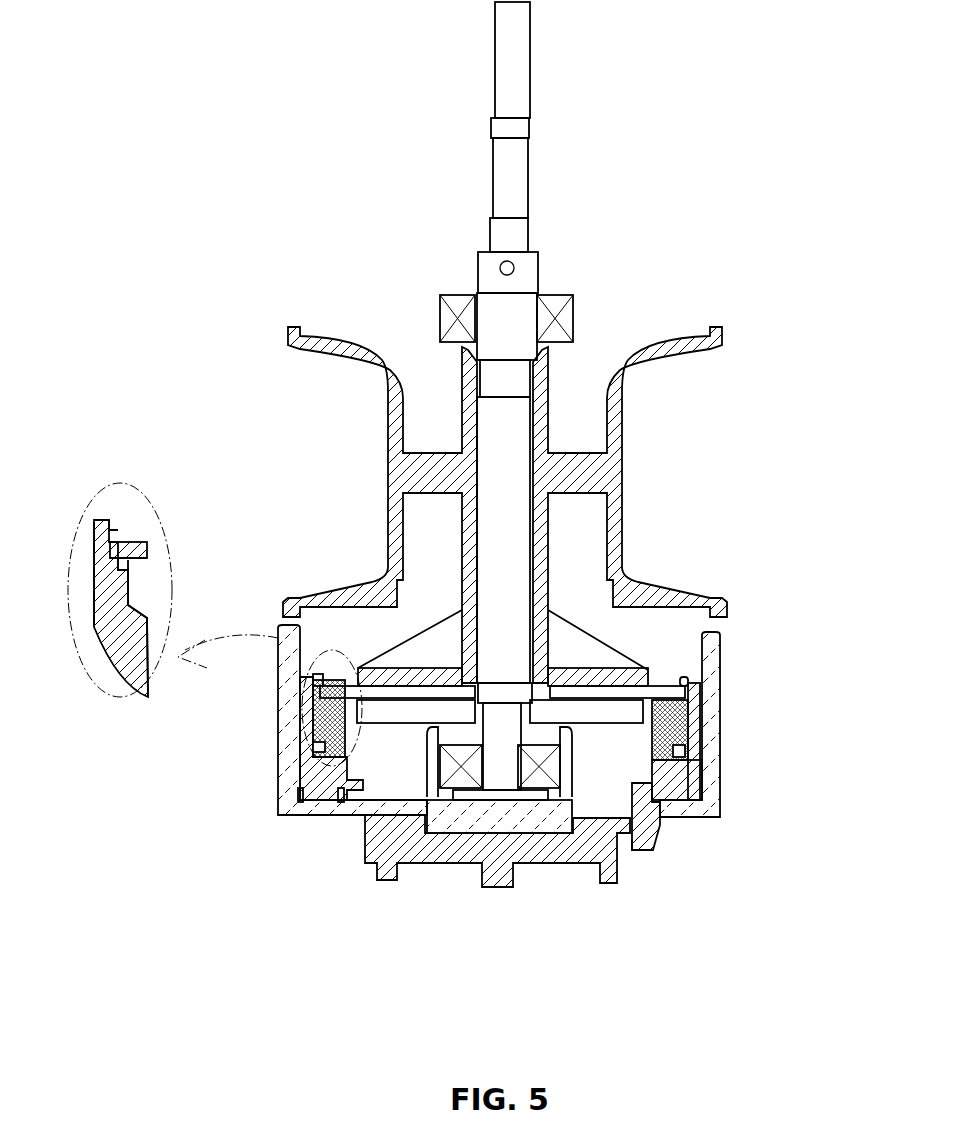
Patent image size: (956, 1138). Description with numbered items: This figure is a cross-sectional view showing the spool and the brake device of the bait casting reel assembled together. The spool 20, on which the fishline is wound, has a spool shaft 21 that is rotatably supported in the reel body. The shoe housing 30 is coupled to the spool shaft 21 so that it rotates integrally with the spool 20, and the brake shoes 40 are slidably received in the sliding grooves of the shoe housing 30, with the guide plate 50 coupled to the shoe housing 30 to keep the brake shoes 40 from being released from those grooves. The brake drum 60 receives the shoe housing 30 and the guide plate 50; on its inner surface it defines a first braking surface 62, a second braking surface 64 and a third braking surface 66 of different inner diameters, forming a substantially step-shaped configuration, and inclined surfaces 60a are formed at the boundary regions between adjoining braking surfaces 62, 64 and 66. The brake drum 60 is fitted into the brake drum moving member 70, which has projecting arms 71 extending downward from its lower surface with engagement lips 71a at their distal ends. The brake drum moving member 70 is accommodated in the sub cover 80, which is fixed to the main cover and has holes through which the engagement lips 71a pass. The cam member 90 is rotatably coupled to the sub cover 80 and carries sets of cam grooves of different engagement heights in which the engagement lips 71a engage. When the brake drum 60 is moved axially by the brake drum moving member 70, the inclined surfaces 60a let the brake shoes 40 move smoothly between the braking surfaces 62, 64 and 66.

The spool 20 is at (602, 467).
The spool shaft 21 is at (520, 672).
The shoe housing 30 is at (640, 625).
The brake shoes 40 is at (693, 682).
The guide plate 50 is at (628, 712).
The brake drum 60 is at (700, 733).
The inclined surfaces 60a is at (100, 573).
The first braking surface 62 is at (112, 520).
The second braking surface 64 is at (128, 590).
The third braking surface 66 is at (148, 633).
The brake drum moving member 70 is at (703, 770).
The projecting arms 71 is at (653, 827).
The engagement lips 71a is at (625, 847).
The sub cover 80 is at (710, 787).
The cam member 90 is at (422, 868).